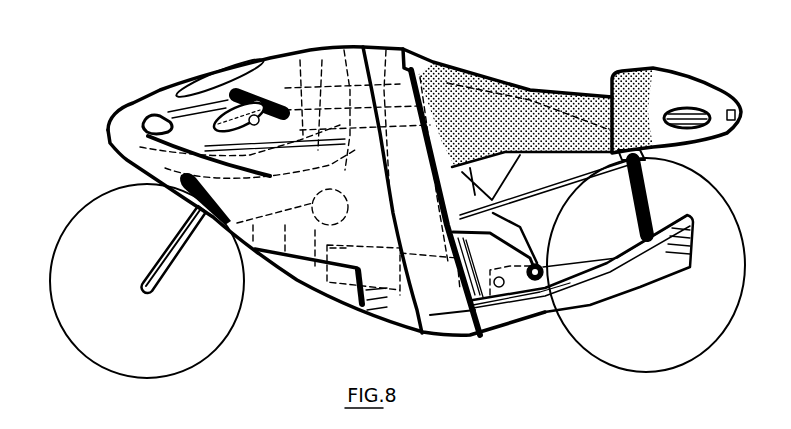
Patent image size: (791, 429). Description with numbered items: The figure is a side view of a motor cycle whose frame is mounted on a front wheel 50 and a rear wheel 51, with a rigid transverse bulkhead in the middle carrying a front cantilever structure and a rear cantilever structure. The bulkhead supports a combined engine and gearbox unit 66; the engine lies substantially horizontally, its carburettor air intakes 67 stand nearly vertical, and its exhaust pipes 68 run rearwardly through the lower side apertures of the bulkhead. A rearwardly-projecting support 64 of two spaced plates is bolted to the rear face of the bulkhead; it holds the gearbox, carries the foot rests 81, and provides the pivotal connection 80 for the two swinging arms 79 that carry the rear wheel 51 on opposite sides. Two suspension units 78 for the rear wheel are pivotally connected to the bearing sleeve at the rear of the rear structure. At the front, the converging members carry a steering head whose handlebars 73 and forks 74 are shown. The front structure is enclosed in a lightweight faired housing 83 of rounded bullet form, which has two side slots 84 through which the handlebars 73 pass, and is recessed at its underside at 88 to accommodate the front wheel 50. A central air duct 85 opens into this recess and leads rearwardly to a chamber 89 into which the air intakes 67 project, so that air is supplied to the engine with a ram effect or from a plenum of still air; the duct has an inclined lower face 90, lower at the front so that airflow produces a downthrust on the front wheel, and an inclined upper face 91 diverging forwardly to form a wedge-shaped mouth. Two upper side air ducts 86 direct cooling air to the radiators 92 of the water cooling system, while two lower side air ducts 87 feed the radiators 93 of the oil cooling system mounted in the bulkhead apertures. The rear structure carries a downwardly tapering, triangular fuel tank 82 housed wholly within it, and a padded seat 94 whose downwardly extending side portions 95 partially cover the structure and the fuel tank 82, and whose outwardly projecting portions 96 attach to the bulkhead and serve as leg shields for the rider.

The front wheel 50 is at (62, 313).
The rear wheel 51 is at (630, 353).
The rearwardly-projecting support 64 is at (508, 230).
The combined engine and gearbox unit 66 is at (315, 268).
The air intakes 67 is at (358, 46).
The exhaust pipes 68 is at (593, 297).
The handlebars 73 is at (226, 97).
The forks 74 is at (157, 260).
The suspension units 78 is at (686, 168).
The swinging arms 79 is at (565, 263).
The pivotal connection 80 is at (499, 287).
The foot rests 81 is at (533, 263).
The fuel tank 82 is at (513, 127).
The faired housing 83 is at (133, 112).
The side slots 84 is at (280, 108).
The central air duct 85 is at (322, 60).
The upper side air ducts 86 is at (253, 245).
The lower side air ducts 87 is at (388, 300).
The recess 88 is at (140, 147).
The chamber 89 is at (386, 50).
The lower face 90 is at (285, 255).
The upper face 91 is at (300, 60).
The radiators 92 is at (410, 180).
The radiators 93 is at (433, 335).
The padded seat 94 is at (553, 88).
The side portions 95 is at (552, 101).
The outwardly projecting portions 96 is at (428, 143).